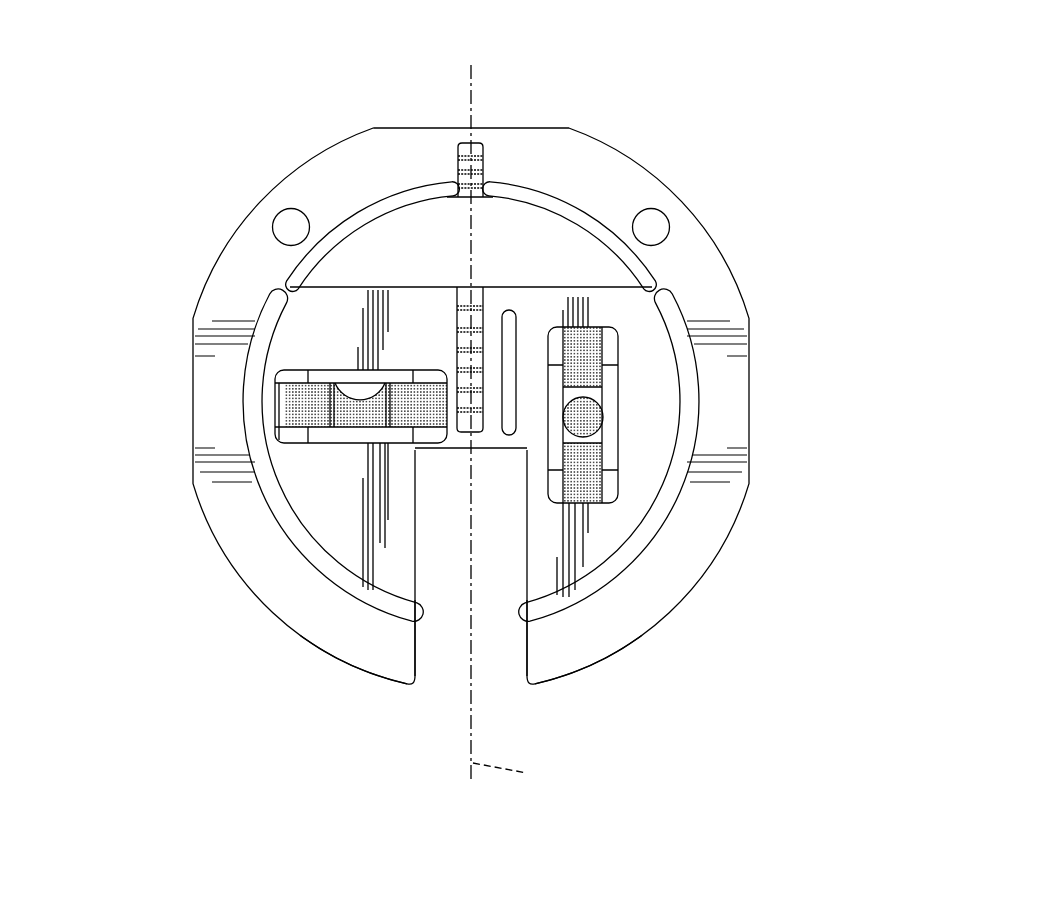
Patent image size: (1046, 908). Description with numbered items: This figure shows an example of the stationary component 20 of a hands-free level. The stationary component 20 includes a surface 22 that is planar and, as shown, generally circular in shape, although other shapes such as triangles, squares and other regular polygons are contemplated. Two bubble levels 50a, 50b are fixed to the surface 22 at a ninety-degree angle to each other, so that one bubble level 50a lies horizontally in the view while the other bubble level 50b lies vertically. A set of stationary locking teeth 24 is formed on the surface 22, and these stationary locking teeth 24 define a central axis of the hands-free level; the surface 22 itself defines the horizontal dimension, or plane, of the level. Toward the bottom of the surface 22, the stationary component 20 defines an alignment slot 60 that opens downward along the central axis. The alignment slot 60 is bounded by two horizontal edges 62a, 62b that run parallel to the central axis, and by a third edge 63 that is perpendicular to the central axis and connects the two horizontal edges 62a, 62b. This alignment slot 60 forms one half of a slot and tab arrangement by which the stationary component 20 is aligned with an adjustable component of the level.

The stationary component 20 is at (742, 60).
The surface 22 is at (632, 182).
The stationary locking teeth 24 is at (466, 302).
The bubble level 50a is at (277, 410).
The bubble level 50b is at (598, 463).
The alignment slot 60 is at (500, 556).
The horizontal edge 62a is at (418, 643).
The horizontal edge 62b is at (522, 643).
The third edge 63 is at (445, 450).